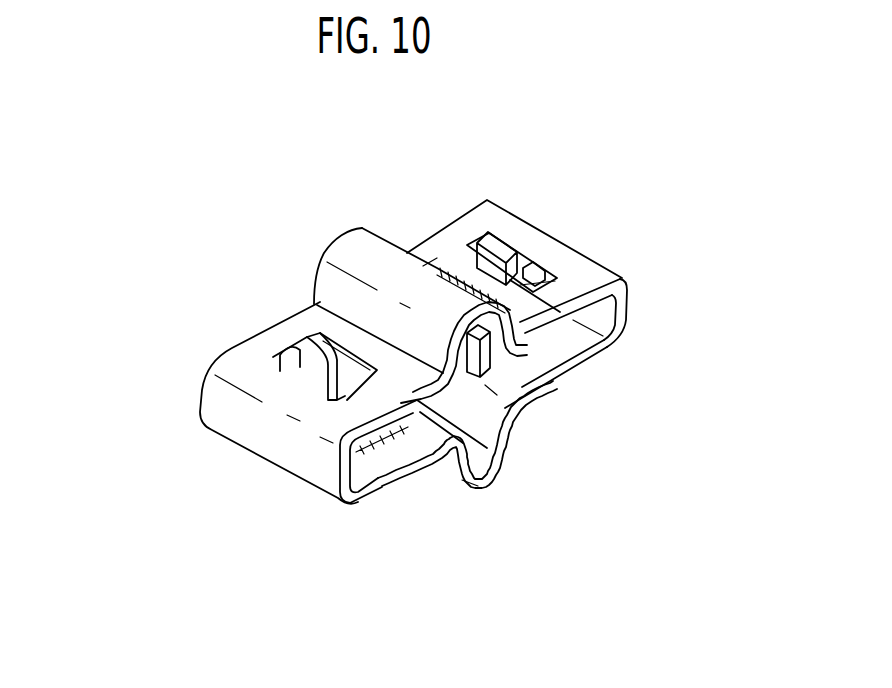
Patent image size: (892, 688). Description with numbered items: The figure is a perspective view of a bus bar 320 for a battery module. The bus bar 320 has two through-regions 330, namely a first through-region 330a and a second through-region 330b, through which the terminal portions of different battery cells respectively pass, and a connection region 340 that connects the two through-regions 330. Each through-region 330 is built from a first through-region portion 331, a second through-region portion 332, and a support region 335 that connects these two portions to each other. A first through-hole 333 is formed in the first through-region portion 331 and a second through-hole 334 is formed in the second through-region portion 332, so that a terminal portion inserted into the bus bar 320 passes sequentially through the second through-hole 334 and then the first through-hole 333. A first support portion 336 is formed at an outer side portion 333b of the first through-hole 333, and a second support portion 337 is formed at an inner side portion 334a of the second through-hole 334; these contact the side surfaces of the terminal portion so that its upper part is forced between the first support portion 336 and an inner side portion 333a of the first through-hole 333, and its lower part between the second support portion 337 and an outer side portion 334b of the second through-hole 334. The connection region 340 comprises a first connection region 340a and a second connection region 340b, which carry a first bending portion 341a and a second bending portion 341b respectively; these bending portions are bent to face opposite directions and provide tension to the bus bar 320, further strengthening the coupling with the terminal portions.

The bus bar 320 is at (141, 158).
The through-region 330 is at (736, 303).
The first through-region 330a is at (387, 497).
The second through-region 330b is at (558, 392).
The first through-region portion 331 is at (588, 293).
The second through-region portion 332 is at (590, 370).
The first through-hole 333 is at (475, 280).
The inner side portion of the first through-hole 333a is at (343, 350).
The outer side portion of the first through-hole 333b is at (290, 352).
The second through-hole 334 is at (508, 362).
The inner side portion of the second through-hole 334a is at (493, 393).
The outer side portion of the second through-hole 334b is at (557, 278).
The support region 335 is at (627, 328).
The first support portion 336 is at (500, 242).
The second support portion 337 is at (430, 262).
The connection region 340 is at (432, 592).
The first connection region 340a is at (443, 314).
The second connection region 340b is at (490, 485).
The first bending portion 341a is at (379, 258).
The second bending portion 341b is at (490, 462).